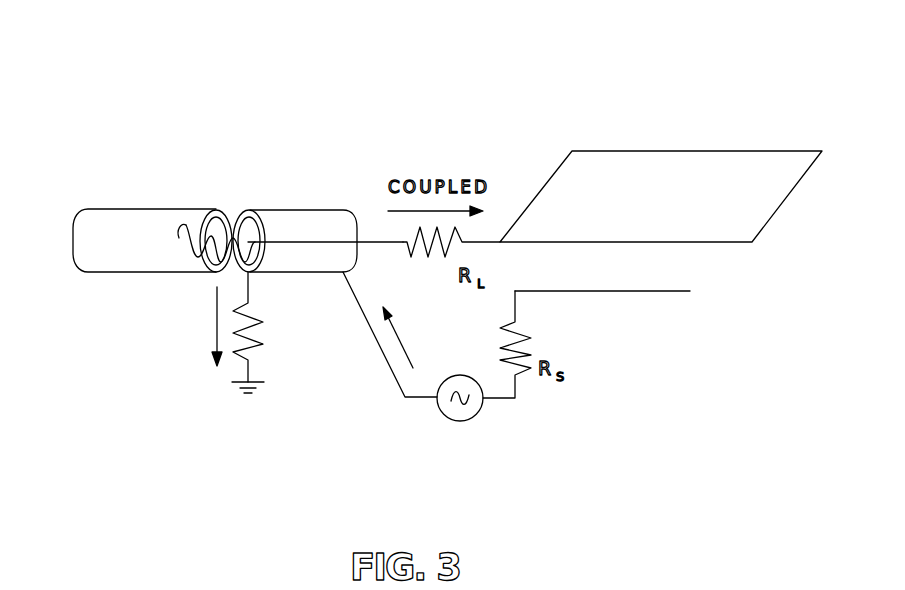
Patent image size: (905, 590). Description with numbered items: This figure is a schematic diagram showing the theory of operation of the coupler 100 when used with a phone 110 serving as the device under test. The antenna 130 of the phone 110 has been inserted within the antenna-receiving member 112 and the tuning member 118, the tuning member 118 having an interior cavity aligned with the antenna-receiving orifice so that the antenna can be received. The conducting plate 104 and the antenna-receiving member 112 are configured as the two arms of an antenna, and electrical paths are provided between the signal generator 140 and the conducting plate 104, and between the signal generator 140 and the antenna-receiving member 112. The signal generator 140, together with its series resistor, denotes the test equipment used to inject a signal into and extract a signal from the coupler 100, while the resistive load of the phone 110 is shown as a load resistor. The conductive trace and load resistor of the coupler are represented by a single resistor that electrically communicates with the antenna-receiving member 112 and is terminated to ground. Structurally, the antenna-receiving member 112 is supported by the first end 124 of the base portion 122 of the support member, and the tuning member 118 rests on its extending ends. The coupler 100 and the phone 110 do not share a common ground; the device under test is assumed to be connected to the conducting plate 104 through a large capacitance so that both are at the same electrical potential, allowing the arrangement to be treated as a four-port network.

The coupler 100 is at (124, 94).
The tuning member 118 is at (106, 208).
The antenna 130 is at (187, 224).
The antenna-receiving member 112 is at (312, 211).
The phone 110 is at (610, 151).
The conducting plate 104 is at (580, 291).
The signal generator 140 is at (460, 421).
The base portion 122 is at (284, 370).
The first end 124 is at (285, 356).